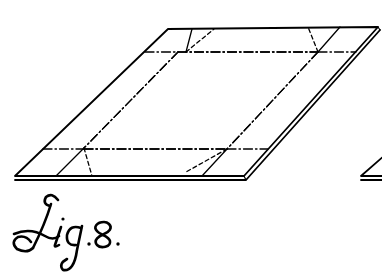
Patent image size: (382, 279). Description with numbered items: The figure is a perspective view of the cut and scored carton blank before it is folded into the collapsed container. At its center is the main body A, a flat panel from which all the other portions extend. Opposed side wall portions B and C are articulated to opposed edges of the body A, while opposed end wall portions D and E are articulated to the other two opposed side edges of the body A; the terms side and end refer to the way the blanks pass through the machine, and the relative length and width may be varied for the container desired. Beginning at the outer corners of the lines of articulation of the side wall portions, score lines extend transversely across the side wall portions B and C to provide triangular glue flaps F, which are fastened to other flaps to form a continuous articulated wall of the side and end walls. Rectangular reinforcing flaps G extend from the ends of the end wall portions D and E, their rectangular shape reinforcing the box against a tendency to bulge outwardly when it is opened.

The main body A is at (201, 100).
The side wall portion B is at (248, 41).
The side wall portion C is at (155, 160).
The end wall portion D is at (131, 100).
The end wall portion E is at (272, 100).
The glue flap F is at (199, 101).
The reinforcing flap G is at (196, 101).